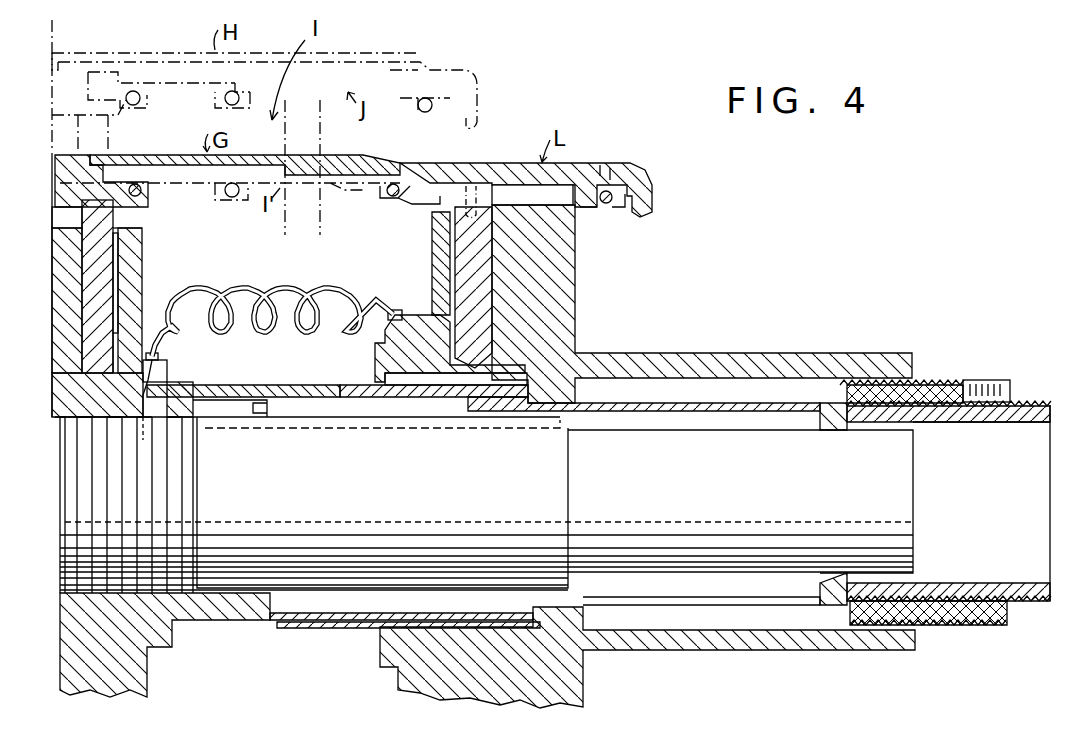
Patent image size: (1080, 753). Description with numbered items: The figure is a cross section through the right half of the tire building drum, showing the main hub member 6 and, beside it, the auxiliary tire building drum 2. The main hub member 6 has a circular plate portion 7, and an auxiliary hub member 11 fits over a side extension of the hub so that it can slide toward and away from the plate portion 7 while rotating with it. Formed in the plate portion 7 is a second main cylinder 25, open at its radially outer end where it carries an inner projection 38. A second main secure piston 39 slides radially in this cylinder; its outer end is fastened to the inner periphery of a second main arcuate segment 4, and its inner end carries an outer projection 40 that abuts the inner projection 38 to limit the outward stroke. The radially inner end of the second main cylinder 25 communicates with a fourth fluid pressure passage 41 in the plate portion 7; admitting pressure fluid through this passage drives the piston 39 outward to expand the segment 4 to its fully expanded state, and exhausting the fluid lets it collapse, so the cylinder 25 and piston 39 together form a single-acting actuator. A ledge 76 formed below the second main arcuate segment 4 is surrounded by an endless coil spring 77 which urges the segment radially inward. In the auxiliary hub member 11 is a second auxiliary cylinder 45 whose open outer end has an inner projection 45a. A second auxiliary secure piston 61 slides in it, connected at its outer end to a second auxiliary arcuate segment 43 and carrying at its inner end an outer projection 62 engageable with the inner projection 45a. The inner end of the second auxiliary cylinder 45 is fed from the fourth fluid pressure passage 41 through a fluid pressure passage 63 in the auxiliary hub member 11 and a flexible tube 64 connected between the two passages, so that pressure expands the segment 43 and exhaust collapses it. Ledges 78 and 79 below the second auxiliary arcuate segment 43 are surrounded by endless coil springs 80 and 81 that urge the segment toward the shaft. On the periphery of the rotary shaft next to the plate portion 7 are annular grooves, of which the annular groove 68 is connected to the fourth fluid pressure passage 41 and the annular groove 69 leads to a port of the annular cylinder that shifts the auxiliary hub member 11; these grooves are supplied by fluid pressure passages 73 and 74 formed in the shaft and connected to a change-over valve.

The auxiliary tire building drum 2 is at (511, 146).
The second main arcuate segment 4 is at (176, 156).
The main hub member 6 is at (157, 255).
The circular plate portion 7 is at (135, 238).
The auxiliary hub member 11 is at (565, 294).
The second main cylinder 25 is at (122, 272).
The inner projection 38 is at (118, 228).
The second main secure piston 39 is at (92, 262).
The outer projection 40 is at (118, 338).
The fourth fluid pressure passage 41 is at (155, 366).
The second auxiliary arcuate segment 43 is at (608, 170).
The second auxiliary cylinder 45 is at (480, 292).
The inner projection 45a is at (455, 212).
The second auxiliary secure piston 61 is at (478, 262).
The outer projection 62 is at (458, 334).
The fluid pressure passage 63 is at (378, 355).
The flexible tube 64 is at (278, 290).
The annular groove 68 is at (142, 496).
The annular groove 69 is at (172, 528).
The fluid pressure passage 73 is at (145, 440).
The fluid pressure passage 74 is at (185, 568).
The ledge 76 is at (147, 192).
The endless coil spring 77 is at (135, 184).
The ledge 78 is at (588, 212).
The ledge 79 is at (398, 206).
The endless coil spring 80 is at (604, 206).
The endless coil spring 81 is at (388, 186).